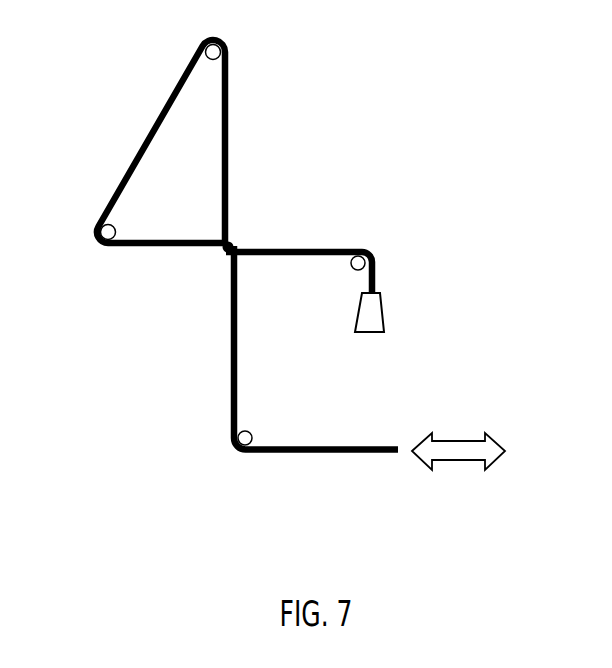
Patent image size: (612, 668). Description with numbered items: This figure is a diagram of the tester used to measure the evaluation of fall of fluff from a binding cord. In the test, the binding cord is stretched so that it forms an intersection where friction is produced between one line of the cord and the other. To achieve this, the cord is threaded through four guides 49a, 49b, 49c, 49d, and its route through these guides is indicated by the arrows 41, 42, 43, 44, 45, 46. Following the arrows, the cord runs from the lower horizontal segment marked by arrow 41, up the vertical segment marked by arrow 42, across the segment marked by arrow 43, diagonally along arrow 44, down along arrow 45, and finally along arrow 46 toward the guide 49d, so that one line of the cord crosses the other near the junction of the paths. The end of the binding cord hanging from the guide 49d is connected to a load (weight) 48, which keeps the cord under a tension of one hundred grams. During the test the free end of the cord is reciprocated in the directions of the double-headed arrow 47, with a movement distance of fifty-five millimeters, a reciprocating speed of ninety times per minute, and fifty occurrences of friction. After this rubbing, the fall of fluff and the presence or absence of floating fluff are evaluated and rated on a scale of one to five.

The arrow 41 is at (350, 463).
The arrow 42 is at (225, 317).
The arrow 43 is at (182, 255).
The arrow 44 is at (160, 106).
The arrow 45 is at (238, 97).
The arrow 46 is at (272, 239).
The arrow 47 is at (460, 440).
The load (weight) 48 is at (385, 308).
The guide 49a is at (252, 431).
The guide 49b is at (112, 223).
The guide 49c is at (208, 63).
The guide 49d is at (357, 272).